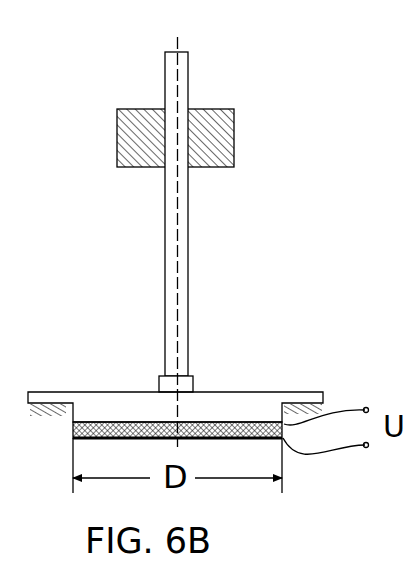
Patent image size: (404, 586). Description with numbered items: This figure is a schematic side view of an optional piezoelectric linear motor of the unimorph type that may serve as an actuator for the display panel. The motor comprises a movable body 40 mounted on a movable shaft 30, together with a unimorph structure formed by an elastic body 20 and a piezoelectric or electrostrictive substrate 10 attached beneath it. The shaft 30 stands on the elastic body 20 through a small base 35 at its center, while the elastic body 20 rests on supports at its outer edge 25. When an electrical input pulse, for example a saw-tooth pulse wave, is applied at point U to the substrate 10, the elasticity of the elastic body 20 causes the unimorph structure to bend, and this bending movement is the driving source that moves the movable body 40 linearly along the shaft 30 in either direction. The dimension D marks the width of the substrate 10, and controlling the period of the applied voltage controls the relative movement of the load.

The piezoelectric or electrostrictive substrate 10 is at (90, 423).
The elastic body 20 is at (238, 408).
The plate edge support 25 is at (308, 392).
The movable shaft 30 is at (182, 287).
The base block 35 is at (190, 382).
The movable body 40 is at (234, 128).